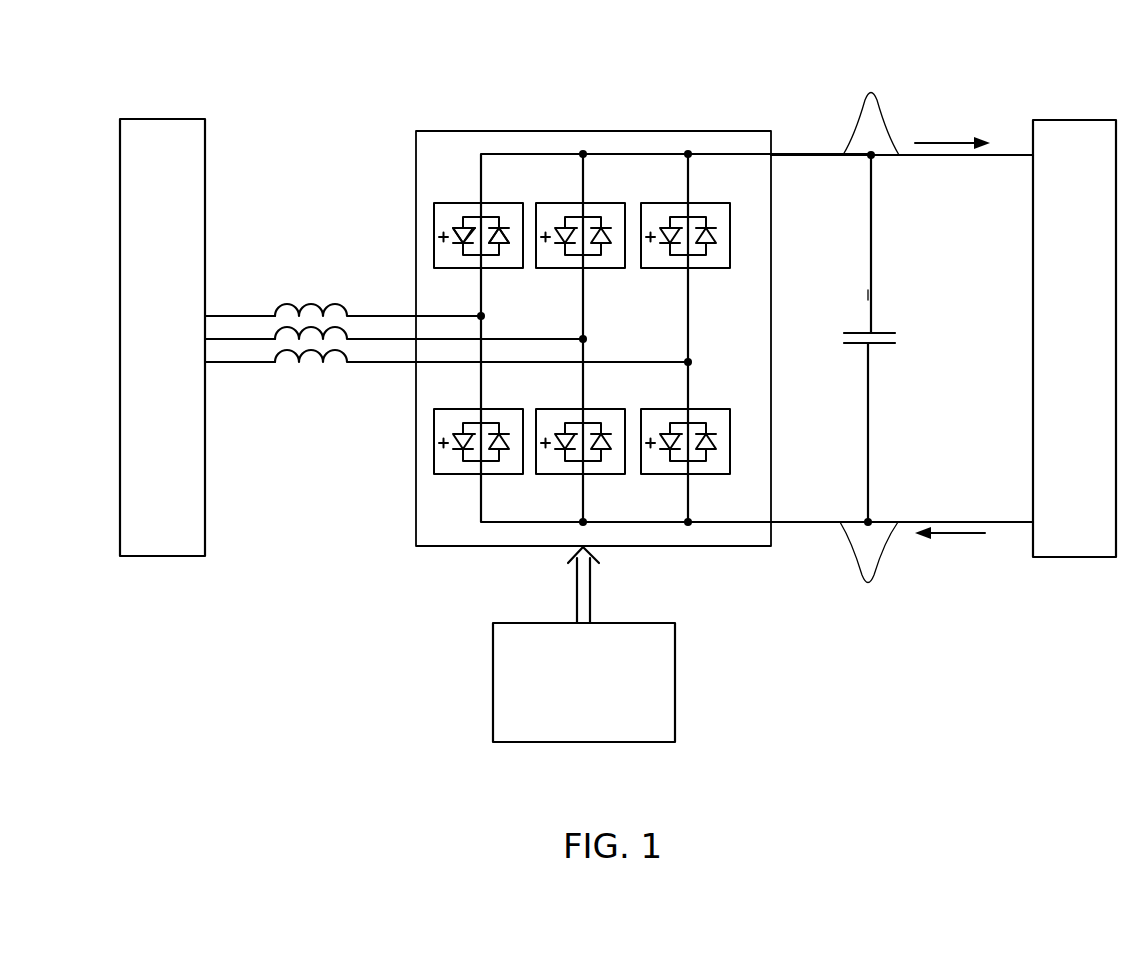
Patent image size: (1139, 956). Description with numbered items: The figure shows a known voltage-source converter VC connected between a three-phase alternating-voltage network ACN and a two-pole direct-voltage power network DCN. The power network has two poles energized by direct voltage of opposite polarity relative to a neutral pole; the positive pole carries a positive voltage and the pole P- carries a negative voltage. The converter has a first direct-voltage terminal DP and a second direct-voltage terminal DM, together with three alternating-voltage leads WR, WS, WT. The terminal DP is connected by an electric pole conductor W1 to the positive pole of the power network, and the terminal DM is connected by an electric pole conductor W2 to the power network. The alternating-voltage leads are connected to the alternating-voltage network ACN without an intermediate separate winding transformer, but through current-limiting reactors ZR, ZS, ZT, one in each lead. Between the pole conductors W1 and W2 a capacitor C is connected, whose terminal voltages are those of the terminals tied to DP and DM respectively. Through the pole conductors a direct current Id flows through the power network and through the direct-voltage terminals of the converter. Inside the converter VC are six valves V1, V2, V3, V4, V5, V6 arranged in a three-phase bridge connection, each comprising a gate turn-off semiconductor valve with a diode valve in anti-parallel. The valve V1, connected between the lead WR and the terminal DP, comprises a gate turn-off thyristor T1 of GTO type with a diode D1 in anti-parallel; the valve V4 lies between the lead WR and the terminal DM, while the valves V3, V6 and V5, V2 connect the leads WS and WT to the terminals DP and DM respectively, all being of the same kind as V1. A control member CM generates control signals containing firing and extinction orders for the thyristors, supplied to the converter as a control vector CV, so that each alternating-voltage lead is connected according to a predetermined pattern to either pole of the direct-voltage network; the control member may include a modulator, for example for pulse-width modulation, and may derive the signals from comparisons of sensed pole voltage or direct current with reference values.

The three-phase alternating-voltage network ACN is at (170, 118).
The two-pole power network DCN is at (1075, 120).
The voltage-source converter VC is at (495, 131).
The current-limiting reactor ZR is at (340, 313).
The current-limiting reactor ZS is at (320, 334).
The current-limiting reactor ZT is at (307, 356).
The alternating-voltage lead WR is at (402, 314).
The alternating-voltage lead WS is at (405, 338).
The alternating-voltage lead WT is at (400, 366).
The valve V1 is at (470, 203).
The valve V2 is at (671, 474).
The valve V3 is at (572, 203).
The valve V4 is at (466, 474).
The valve V5 is at (675, 203).
The valve V6 is at (567, 474).
The gate turn-off thyristor T1 is at (472, 246).
The diode D1 is at (500, 246).
The first direct-voltage terminal DP is at (772, 155).
The second direct-voltage terminal DM is at (772, 523).
The electric pole conductor W1 is at (871, 110).
The electric pole conductor W2 is at (869, 568).
The capacitor C is at (890, 332).
The pole P- is at (1033, 522).
The direct current Id is at (952, 340).
The control member CM is at (493, 706).
The control vector CV is at (630, 577).